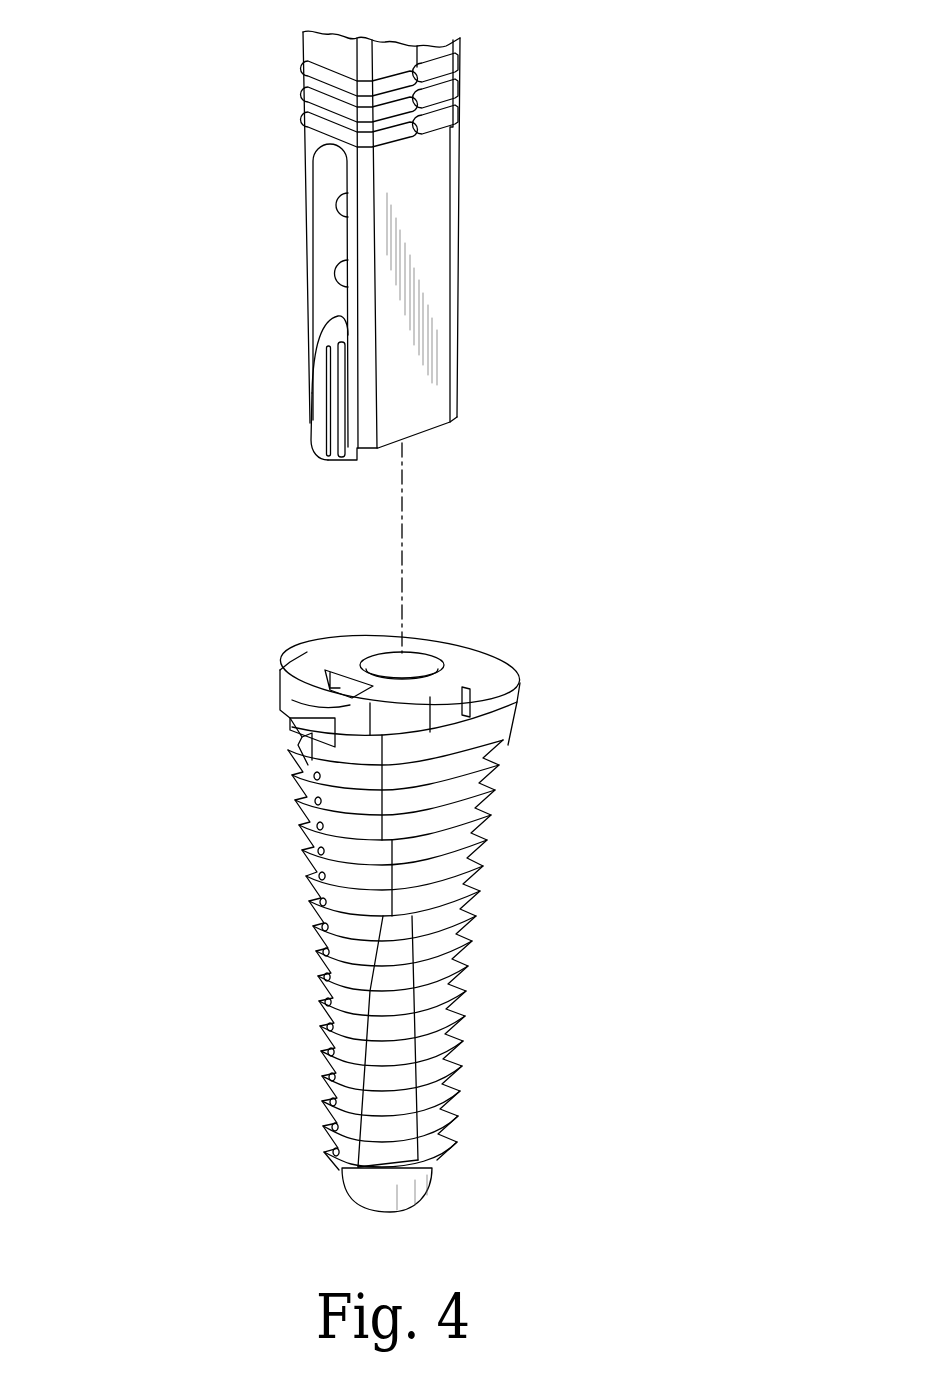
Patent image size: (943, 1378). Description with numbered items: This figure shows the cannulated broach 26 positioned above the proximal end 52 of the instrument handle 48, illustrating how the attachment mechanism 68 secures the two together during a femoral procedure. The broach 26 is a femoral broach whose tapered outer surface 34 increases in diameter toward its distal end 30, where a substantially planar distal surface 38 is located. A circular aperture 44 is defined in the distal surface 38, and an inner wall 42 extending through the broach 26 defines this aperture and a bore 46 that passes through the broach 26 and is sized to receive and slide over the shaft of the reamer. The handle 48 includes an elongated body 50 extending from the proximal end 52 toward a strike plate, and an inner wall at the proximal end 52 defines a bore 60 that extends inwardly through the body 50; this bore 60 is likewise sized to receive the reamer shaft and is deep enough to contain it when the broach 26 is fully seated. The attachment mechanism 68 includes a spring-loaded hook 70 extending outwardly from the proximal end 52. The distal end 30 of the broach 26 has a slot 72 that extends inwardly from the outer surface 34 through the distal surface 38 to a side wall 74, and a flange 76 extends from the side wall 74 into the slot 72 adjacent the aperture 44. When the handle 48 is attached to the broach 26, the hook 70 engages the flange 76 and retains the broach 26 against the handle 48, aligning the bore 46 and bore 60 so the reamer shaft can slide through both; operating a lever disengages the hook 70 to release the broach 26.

The cannulated broach 26 is at (700, 886).
The distal end 30 is at (628, 709).
The outer surface 34 is at (313, 803).
The distal surface 38 is at (452, 640).
The inner wall 42 is at (390, 660).
The circular aperture 44 is at (505, 664).
The bore 46 is at (416, 620).
The instrument handle 48 is at (627, 88).
The elongated body 50 is at (440, 227).
The proximal end 52 is at (535, 374).
The bore 60 is at (440, 455).
The attachment mechanism 68 is at (150, 424).
The spring-loaded hook 70 is at (317, 387).
The slot 72 is at (232, 750).
The side wall 74 is at (284, 700).
The flange 76 is at (296, 663).